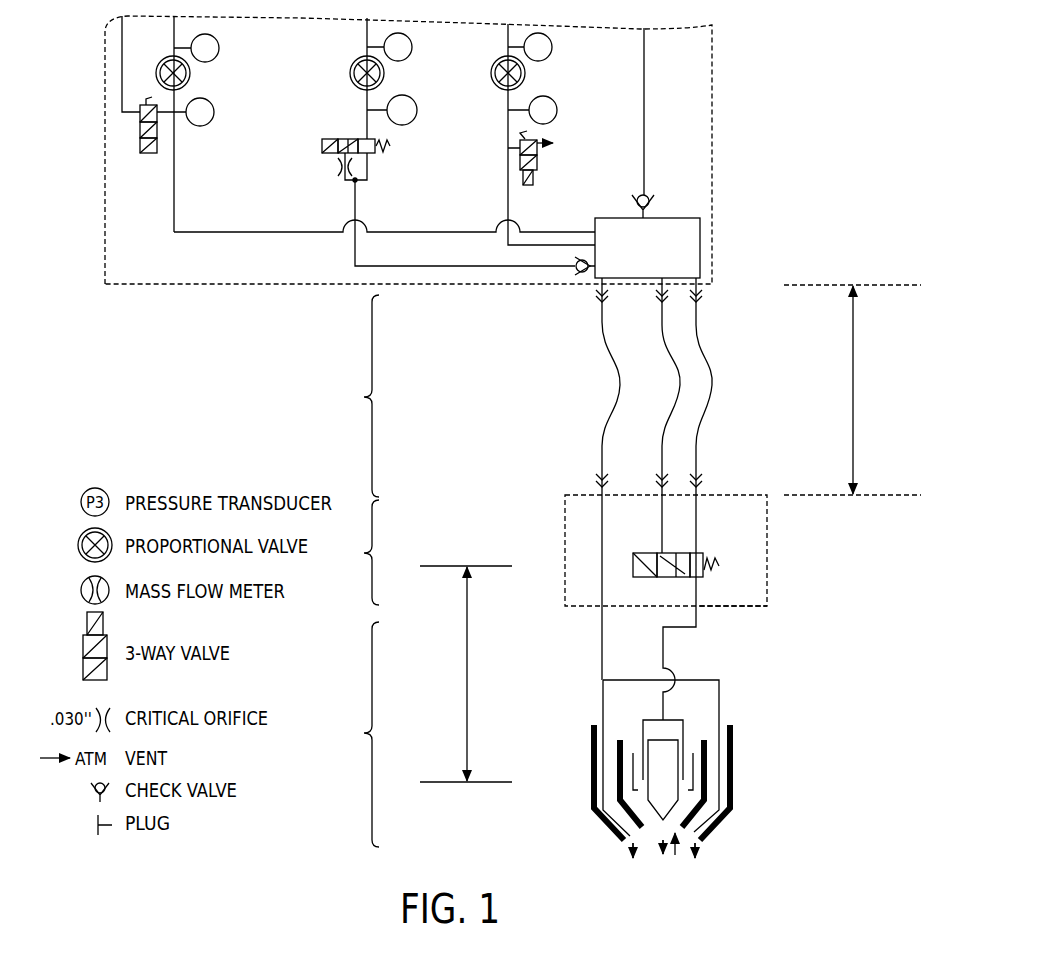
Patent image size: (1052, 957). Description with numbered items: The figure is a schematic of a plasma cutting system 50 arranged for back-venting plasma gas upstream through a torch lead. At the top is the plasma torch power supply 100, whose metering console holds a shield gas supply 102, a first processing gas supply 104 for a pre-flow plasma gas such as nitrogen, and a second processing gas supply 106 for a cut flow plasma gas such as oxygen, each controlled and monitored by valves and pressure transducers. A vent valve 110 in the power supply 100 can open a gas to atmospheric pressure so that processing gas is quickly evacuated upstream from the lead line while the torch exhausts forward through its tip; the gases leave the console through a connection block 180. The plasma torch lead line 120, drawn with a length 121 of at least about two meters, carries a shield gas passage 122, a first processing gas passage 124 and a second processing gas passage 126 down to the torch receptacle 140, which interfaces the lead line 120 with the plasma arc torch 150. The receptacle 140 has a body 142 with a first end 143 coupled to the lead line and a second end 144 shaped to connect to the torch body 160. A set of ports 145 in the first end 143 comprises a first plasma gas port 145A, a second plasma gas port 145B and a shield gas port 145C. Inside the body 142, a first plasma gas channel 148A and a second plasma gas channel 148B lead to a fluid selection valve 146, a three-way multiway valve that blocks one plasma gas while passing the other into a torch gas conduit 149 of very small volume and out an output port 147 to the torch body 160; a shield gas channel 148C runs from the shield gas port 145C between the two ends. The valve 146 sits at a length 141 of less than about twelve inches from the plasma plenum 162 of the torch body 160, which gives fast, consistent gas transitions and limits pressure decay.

The plasma cutting system 50 is at (828, 130).
The plasma torch power supply 100 is at (103, 270).
The shield gas supply 102 is at (420, 110).
The first processing gas supply 104 is at (530, 74).
The second processing gas supply 106 is at (218, 112).
The vent valve 110 is at (603, 126).
The plasma torch lead line 120 is at (353, 396).
The lead line length 121 is at (856, 392).
The shield gas passage 122 is at (592, 448).
The first processing gas passage 124 is at (707, 300).
The second processing gas passage 126 is at (648, 298).
The torch receptacle 140 is at (353, 552).
The valve-to-plenum length 141 is at (465, 673).
The receptacle body 142 is at (583, 612).
The first end 143 is at (773, 499).
The second end 144 is at (775, 600).
The set of ports 145 is at (699, 477).
The first plasma gas port 145A is at (699, 512).
The second plasma gas port 145B is at (664, 512).
The shield gas port 145C is at (602, 520).
The fluid selection valve 146 is at (729, 567).
The output port 147 is at (704, 617).
The first plasma gas channel 148A is at (713, 553).
The second plasma gas channel 148B is at (657, 519).
The shield gas channel 148C is at (602, 568).
The torch gas conduit 149 is at (705, 584).
The plasma arc torch 150 is at (353, 734).
The torch body 160 is at (776, 771).
The plasma plenum 162 is at (682, 843).
The one connect manifold 180 is at (700, 232).